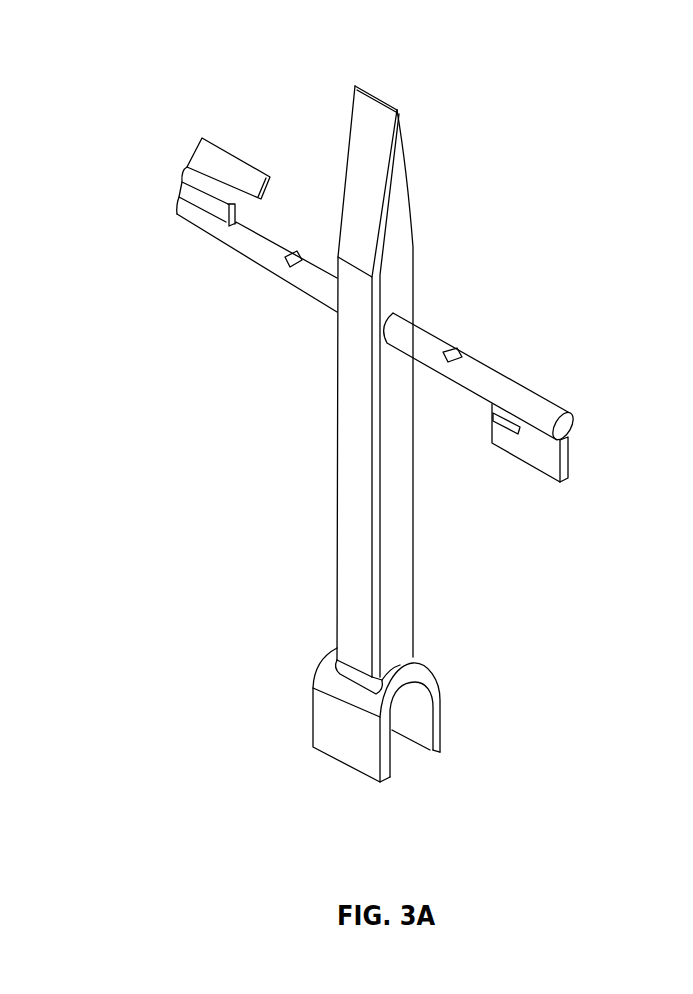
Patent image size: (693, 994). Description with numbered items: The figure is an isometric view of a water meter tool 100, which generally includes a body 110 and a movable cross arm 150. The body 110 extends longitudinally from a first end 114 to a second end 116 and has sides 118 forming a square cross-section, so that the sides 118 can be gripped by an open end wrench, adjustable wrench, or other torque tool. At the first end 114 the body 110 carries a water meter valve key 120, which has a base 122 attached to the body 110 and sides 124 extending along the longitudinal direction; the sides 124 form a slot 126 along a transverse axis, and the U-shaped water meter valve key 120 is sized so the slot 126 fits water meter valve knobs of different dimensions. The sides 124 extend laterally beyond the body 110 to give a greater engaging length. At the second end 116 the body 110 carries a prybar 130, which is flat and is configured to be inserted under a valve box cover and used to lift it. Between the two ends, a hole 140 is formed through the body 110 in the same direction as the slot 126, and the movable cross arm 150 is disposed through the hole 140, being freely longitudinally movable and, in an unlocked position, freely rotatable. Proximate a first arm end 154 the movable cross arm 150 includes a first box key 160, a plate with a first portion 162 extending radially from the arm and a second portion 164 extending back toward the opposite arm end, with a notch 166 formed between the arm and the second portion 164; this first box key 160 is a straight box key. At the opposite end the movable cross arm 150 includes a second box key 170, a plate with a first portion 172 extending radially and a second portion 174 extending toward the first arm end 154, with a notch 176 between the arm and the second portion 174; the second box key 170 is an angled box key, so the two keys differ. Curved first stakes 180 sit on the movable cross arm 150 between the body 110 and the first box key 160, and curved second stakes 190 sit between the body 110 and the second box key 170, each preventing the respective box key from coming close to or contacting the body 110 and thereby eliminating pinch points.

The water meter tool 100 is at (530, 81).
The body 110 is at (320, 576).
The first end 114 is at (433, 753).
The second end 116 is at (378, 96).
The sides 118 is at (403, 615).
The water meter valve key 120 is at (300, 716).
The base 122 is at (332, 683).
The sides 124 is at (333, 748).
The slot 126 is at (403, 753).
The prybar 130 is at (348, 128).
The hole 140 is at (405, 308).
The movable cross arm 150 is at (522, 352).
The first arm end 154 is at (570, 427).
The first box key 160 is at (528, 496).
The first portion 162 is at (550, 462).
The second portion 164 is at (508, 438).
The notch 166 is at (497, 413).
The second box key 170 is at (240, 126).
The first portion 172 is at (207, 162).
The second portion 174 is at (248, 178).
The notch 176 is at (253, 218).
The first stakes 180 is at (453, 348).
The second stakes 190 is at (280, 267).